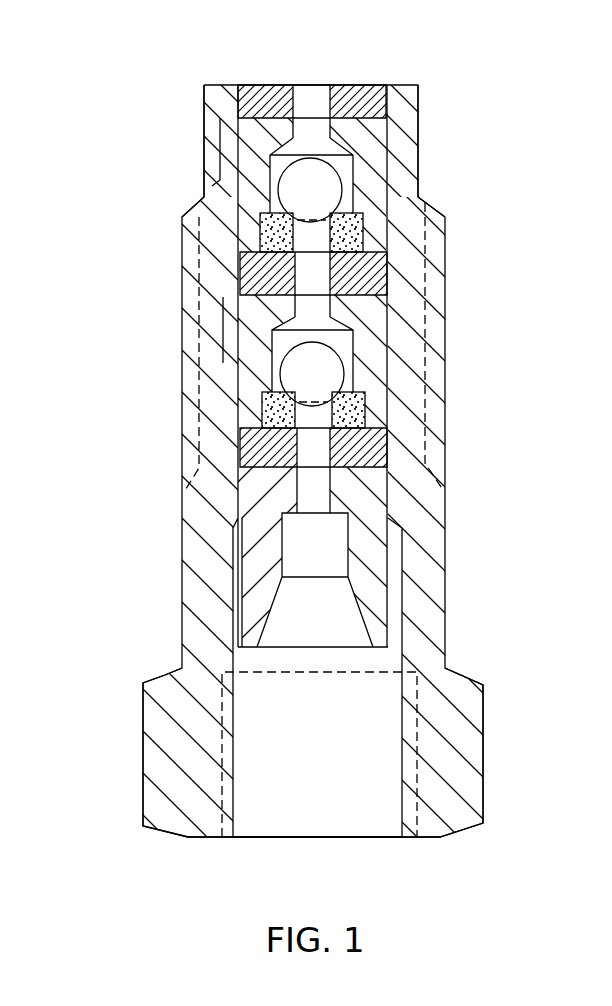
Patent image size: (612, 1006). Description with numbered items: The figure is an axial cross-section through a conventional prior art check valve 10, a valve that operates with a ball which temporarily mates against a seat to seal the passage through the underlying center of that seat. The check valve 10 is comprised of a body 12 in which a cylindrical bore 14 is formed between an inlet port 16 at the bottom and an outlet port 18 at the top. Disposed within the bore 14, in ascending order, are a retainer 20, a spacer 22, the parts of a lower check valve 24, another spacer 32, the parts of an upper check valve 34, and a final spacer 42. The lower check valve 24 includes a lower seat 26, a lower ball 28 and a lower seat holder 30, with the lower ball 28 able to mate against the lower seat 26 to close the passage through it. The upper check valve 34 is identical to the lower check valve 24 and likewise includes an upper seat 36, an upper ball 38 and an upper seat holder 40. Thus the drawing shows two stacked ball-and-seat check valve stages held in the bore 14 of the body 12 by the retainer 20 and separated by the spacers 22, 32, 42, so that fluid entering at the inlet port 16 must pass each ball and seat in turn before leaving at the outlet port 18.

The check valve 10 is at (84, 588).
The body 12 is at (463, 692).
The cylindrical bore 14 is at (299, 747).
The inlet port 16 is at (333, 851).
The outlet port 18 is at (314, 86).
The retainer 20 is at (377, 508).
The spacer 22 is at (382, 452).
The lower check valve 24 is at (222, 358).
The lower seat 26 is at (363, 412).
The lower ball 28 is at (330, 376).
The lower seat holder 30 is at (375, 328).
The spacer 32 is at (378, 283).
The upper check valve 34 is at (212, 186).
The upper seat 36 is at (363, 232).
The upper ball 38 is at (332, 194).
The upper seat holder 40 is at (370, 140).
The spacer 42 is at (367, 97).